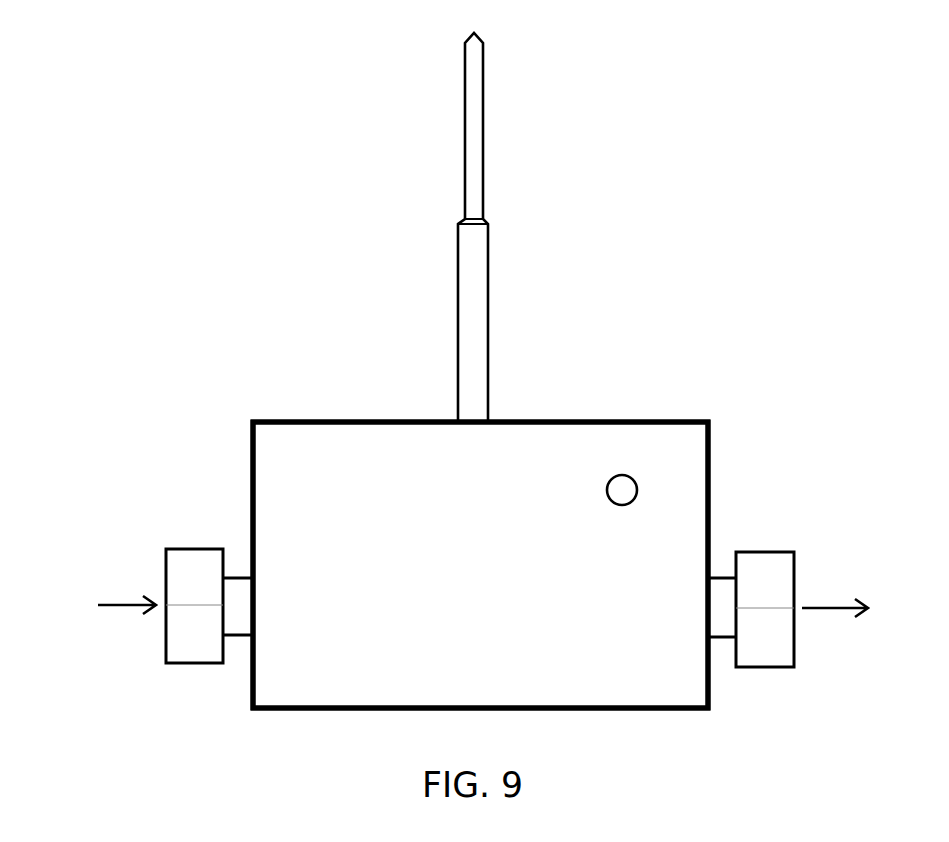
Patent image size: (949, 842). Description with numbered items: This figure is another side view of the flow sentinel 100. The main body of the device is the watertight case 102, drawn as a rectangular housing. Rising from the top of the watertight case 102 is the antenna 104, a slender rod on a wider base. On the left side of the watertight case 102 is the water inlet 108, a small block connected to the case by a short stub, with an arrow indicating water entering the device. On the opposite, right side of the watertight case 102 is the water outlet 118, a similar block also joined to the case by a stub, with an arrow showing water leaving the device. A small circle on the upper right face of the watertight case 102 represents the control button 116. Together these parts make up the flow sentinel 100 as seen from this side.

The flow sentinel 100 is at (742, 486).
The watertight case 102 is at (402, 479).
The antenna 104 is at (478, 166).
The water inlet 108 is at (187, 652).
The control button 116 is at (625, 487).
The water outlet 118 is at (778, 658).